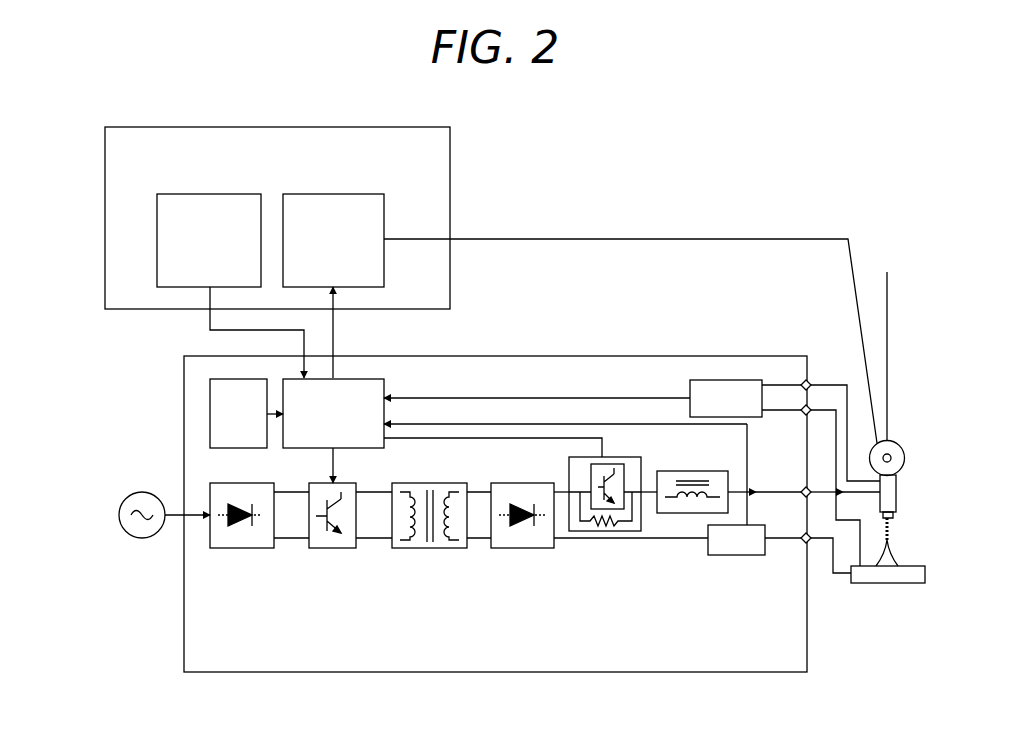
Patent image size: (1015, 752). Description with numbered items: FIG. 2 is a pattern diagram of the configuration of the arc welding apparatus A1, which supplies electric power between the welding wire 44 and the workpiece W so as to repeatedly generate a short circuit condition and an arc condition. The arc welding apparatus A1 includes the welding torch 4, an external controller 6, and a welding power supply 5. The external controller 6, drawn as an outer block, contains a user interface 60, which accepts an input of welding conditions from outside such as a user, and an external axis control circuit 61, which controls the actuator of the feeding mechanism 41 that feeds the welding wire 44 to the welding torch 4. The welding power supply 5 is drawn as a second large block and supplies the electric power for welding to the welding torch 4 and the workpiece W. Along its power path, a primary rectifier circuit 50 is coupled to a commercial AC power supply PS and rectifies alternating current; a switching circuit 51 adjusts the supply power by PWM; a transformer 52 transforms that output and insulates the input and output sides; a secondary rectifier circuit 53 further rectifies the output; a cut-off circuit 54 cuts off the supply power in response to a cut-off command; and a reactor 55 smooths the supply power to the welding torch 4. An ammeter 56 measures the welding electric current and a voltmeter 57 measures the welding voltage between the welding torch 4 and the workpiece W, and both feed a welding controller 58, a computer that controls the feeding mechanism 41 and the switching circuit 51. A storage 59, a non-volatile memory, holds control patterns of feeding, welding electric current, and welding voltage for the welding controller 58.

The external controller 6 is at (86, 234).
The user interface 60 is at (210, 212).
The external axis control circuit 61 is at (334, 212).
The arc welding apparatus A1 is at (630, 195).
The welding power supply 5 is at (136, 599).
The commercial AC power supply PS is at (119, 512).
The storage 59 is at (228, 412).
The welding controller 58 is at (360, 388).
The primary rectifier circuit 50 is at (242, 548).
The switching circuit 51 is at (333, 548).
The transformer 52 is at (428, 548).
The secondary rectifier circuit 53 is at (525, 548).
The cut-off circuit 54 is at (610, 531).
The reactor 55 is at (695, 513).
The ammeter 56 is at (733, 555).
The voltmeter 57 is at (730, 395).
The welding torch 4 is at (920, 499).
The feeding mechanism 41 is at (905, 452).
The welding wire 44 is at (892, 538).
The workpiece W is at (925, 575).